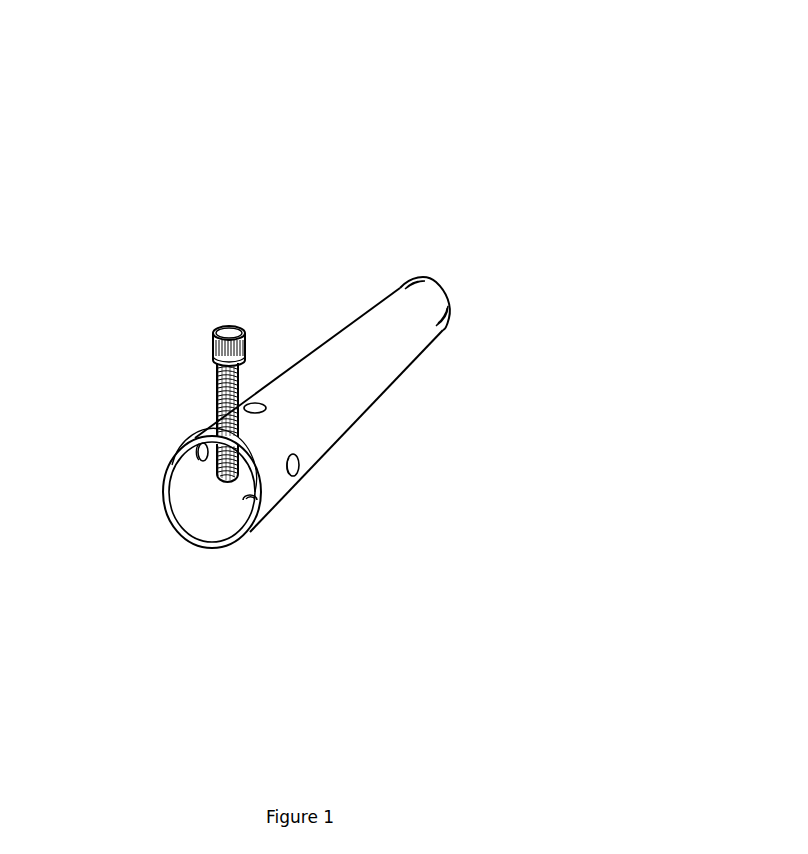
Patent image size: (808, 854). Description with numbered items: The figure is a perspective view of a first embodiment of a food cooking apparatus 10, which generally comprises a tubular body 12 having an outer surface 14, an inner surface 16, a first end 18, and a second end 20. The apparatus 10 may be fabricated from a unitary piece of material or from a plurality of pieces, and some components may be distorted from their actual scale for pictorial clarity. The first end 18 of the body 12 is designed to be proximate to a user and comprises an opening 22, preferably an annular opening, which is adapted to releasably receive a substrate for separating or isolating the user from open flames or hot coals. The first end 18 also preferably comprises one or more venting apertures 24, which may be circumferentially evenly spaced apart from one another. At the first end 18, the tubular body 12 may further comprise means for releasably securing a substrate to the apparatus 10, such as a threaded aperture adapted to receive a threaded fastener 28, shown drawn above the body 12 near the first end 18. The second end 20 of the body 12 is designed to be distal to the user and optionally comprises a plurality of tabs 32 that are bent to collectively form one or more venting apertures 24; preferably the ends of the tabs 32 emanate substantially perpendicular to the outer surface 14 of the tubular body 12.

The food cooking apparatus 10 is at (672, 97).
The tubular body 12 is at (370, 405).
The outer surface 14 is at (207, 432).
The inner surface 16 is at (197, 493).
The first end 18 is at (310, 493).
The second end 20 is at (458, 332).
The opening 22 is at (201, 512).
The venting apertures 24 is at (254, 403).
The threaded fastener 28 is at (225, 335).
The tabs 32 is at (432, 290).